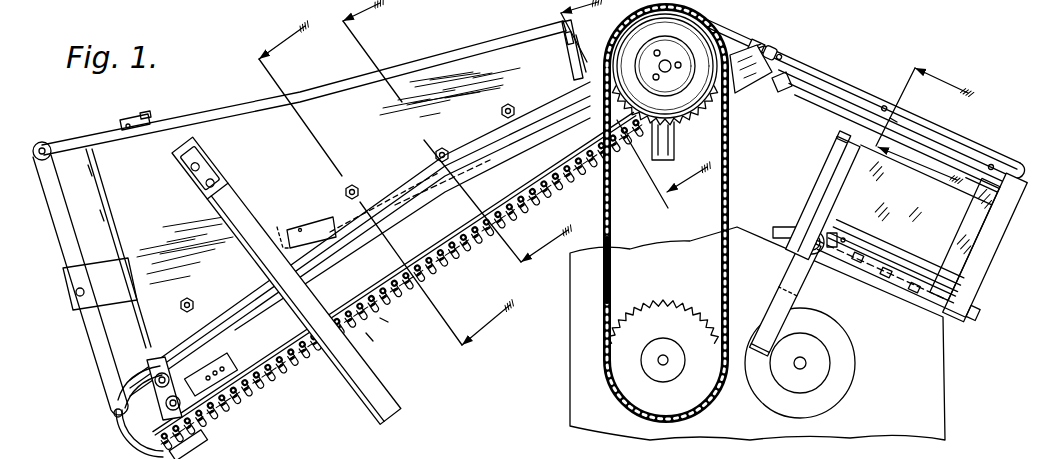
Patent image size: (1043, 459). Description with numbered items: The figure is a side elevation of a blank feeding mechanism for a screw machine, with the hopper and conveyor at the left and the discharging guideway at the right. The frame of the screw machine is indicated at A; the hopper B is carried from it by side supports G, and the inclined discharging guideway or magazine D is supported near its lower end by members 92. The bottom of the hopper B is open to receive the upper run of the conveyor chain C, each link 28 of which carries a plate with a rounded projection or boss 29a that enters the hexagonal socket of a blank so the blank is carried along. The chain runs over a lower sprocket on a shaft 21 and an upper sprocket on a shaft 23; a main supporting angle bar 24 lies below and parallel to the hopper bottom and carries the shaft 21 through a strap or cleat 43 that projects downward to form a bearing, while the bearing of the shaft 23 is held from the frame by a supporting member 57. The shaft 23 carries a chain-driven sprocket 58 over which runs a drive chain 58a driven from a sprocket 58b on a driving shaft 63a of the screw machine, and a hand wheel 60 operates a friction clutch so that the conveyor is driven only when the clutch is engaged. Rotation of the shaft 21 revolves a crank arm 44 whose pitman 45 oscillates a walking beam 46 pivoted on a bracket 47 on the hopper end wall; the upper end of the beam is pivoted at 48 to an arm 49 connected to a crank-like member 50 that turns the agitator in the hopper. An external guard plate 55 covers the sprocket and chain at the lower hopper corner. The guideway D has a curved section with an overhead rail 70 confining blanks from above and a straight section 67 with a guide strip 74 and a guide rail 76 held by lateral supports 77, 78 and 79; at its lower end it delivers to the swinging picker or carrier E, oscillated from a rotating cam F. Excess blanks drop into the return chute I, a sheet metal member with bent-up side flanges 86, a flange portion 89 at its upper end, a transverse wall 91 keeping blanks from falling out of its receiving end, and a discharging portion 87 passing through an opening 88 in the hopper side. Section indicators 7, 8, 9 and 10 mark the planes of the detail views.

The frame of the screw machine A is at (934, 366).
The hopper B is at (261, 159).
The conveyor chain C is at (388, 322).
The discharging guideway D is at (845, 100).
The swinging picker or carrier E is at (985, 259).
The rotating cam F is at (842, 345).
The side supports G is at (360, 388).
The return chute I is at (400, 200).
The section line 7- 7 is at (922, 133).
The section line 8- 8 is at (634, 105).
The section line 9- 9 is at (455, 139).
The section line 10- 10 is at (384, 186).
The lower sprocket shaft 21 is at (202, 428).
The upper sprocket shaft 23 is at (666, 68).
The main supporting angle bar 24 is at (437, 240).
The chain link 28 is at (380, 297).
The rounded projection or boss 29a is at (371, 340).
The strap or cleat 43 is at (205, 395).
The crank arm 44 is at (155, 365).
The pitman 45 is at (134, 402).
The walking beam 46 is at (97, 350).
The bracket 47 is at (95, 274).
The pivot 48 is at (38, 146).
The arm 49 is at (82, 142).
The crank-like member 50 is at (140, 119).
The external guard plate 55 is at (148, 452).
The supporting member 57 is at (730, 156).
The chain-driven sprocket 58 is at (729, 115).
The drive chain 58a is at (613, 282).
The driving sprocket 58b is at (668, 303).
The hand wheel 60 is at (705, 25).
The driving shaft 63a is at (663, 356).
The straight guideway section 67 is at (849, 116).
The overhead rail 70 is at (744, 38).
The guide strip 74 is at (862, 110).
The guide rail 76 is at (919, 124).
The lateral support 77 is at (783, 67).
The lateral support 78 is at (893, 119).
The lateral support 79 is at (994, 165).
The bent-up side flanges 86 is at (377, 210).
The discharging portion 87 is at (280, 236).
The opening 88 is at (300, 228).
The flange portion 89 is at (784, 92).
The wall 91 is at (746, 66).
The supporting members 92 is at (962, 218).